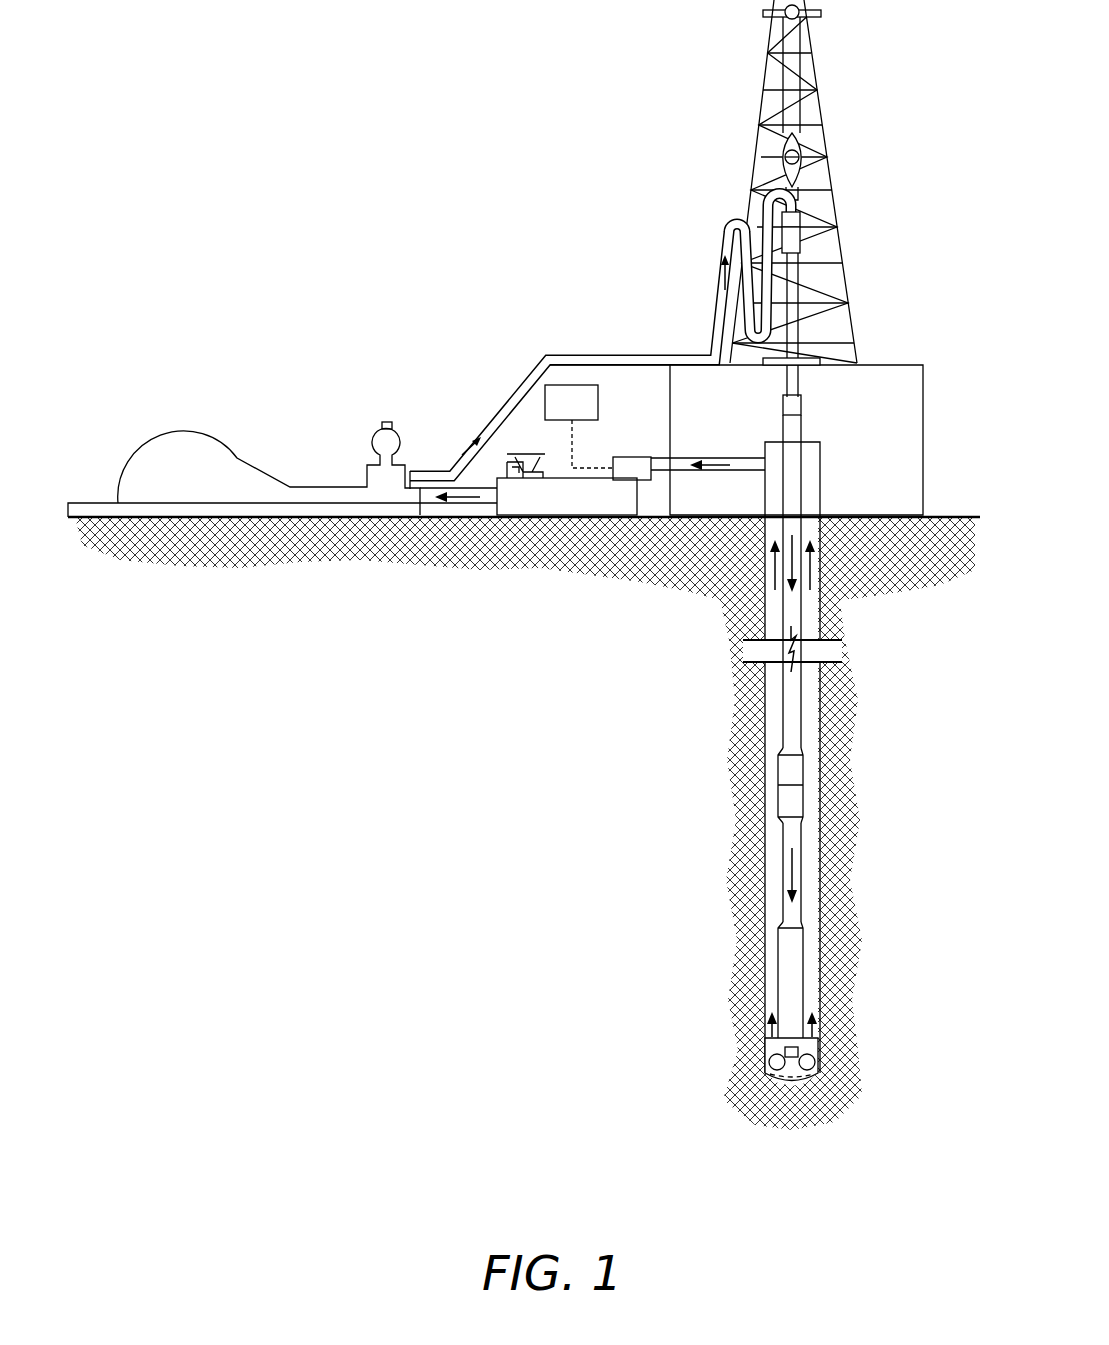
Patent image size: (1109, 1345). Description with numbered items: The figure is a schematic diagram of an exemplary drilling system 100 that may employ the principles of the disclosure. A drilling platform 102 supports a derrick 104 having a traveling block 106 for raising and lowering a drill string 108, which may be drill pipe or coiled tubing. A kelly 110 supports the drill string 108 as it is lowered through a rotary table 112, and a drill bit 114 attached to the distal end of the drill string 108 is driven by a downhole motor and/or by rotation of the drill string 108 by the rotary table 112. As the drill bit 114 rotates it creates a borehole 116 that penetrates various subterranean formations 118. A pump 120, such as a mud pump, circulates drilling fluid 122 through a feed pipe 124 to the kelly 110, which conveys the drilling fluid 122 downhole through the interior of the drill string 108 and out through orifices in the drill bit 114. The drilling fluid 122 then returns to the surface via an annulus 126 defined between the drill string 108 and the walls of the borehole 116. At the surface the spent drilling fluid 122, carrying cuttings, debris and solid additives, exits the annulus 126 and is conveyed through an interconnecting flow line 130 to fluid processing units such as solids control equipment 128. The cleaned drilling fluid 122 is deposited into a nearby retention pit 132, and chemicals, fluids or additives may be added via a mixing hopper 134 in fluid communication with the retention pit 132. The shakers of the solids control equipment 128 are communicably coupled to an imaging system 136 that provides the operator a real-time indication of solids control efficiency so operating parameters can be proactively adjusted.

The drilling system 100 is at (408, 120).
The drilling platform 102 is at (925, 425).
The derrick 104 is at (816, 62).
The traveling block 106 is at (810, 123).
The drill string 108 is at (795, 607).
The kelly 110 is at (828, 258).
The rotary table 112 is at (827, 357).
The drill bit 114 is at (805, 1058).
The borehole 116 is at (822, 685).
The subterranean formations 118 is at (606, 723).
The pump 120 is at (203, 478).
The drilling fluid 122 is at (440, 475).
The feed pipe 124 is at (572, 352).
The annulus 126 is at (812, 862).
The solids control equipment 128 is at (633, 456).
The flow line 130 is at (740, 470).
The retention pit 132 is at (602, 495).
The mixing hopper 134 is at (520, 467).
The imaging system 136 is at (590, 415).